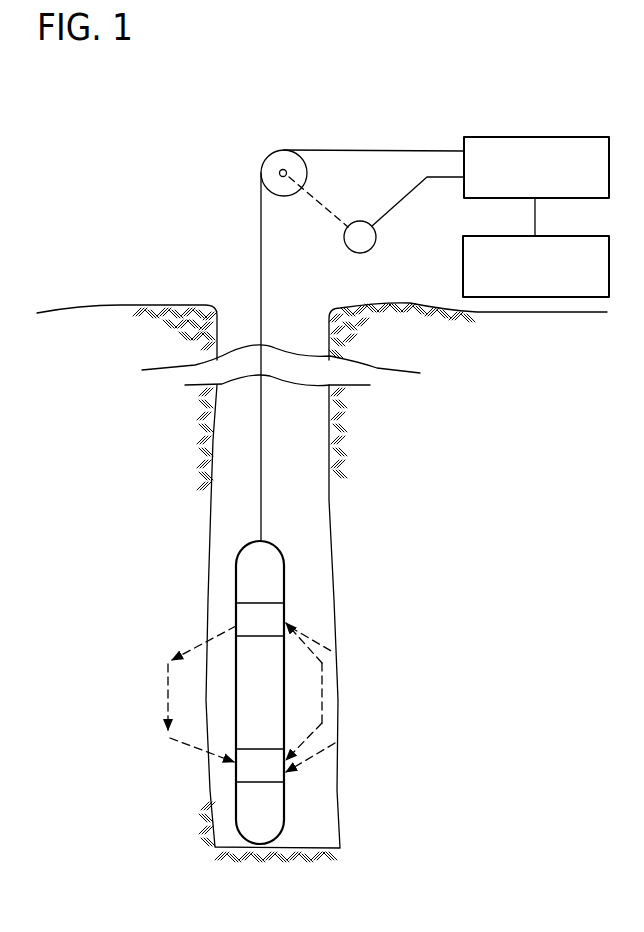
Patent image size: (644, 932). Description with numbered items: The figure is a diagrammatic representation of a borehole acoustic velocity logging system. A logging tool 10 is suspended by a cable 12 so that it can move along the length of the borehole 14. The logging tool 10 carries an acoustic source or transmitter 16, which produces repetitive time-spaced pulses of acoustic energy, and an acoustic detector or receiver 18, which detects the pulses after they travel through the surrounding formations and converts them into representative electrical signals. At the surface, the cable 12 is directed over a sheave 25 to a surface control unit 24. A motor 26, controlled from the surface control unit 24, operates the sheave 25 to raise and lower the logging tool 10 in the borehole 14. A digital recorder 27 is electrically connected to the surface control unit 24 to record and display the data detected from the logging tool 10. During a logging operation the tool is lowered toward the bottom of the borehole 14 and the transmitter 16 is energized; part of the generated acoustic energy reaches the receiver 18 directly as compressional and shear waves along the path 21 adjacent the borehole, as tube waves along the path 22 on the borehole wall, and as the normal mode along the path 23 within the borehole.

The logging tool 10 is at (269, 542).
The cable 12 is at (262, 425).
The borehole 14 is at (242, 490).
The transmitter 16 is at (275, 603).
The receiver 18 is at (275, 749).
The path 21 is at (168, 690).
The path 22 is at (313, 637).
The path 23 is at (322, 695).
The surface control unit 24 is at (546, 137).
The sheave 25 is at (280, 151).
The motor 26 is at (375, 232).
The digital recorder 27 is at (577, 237).